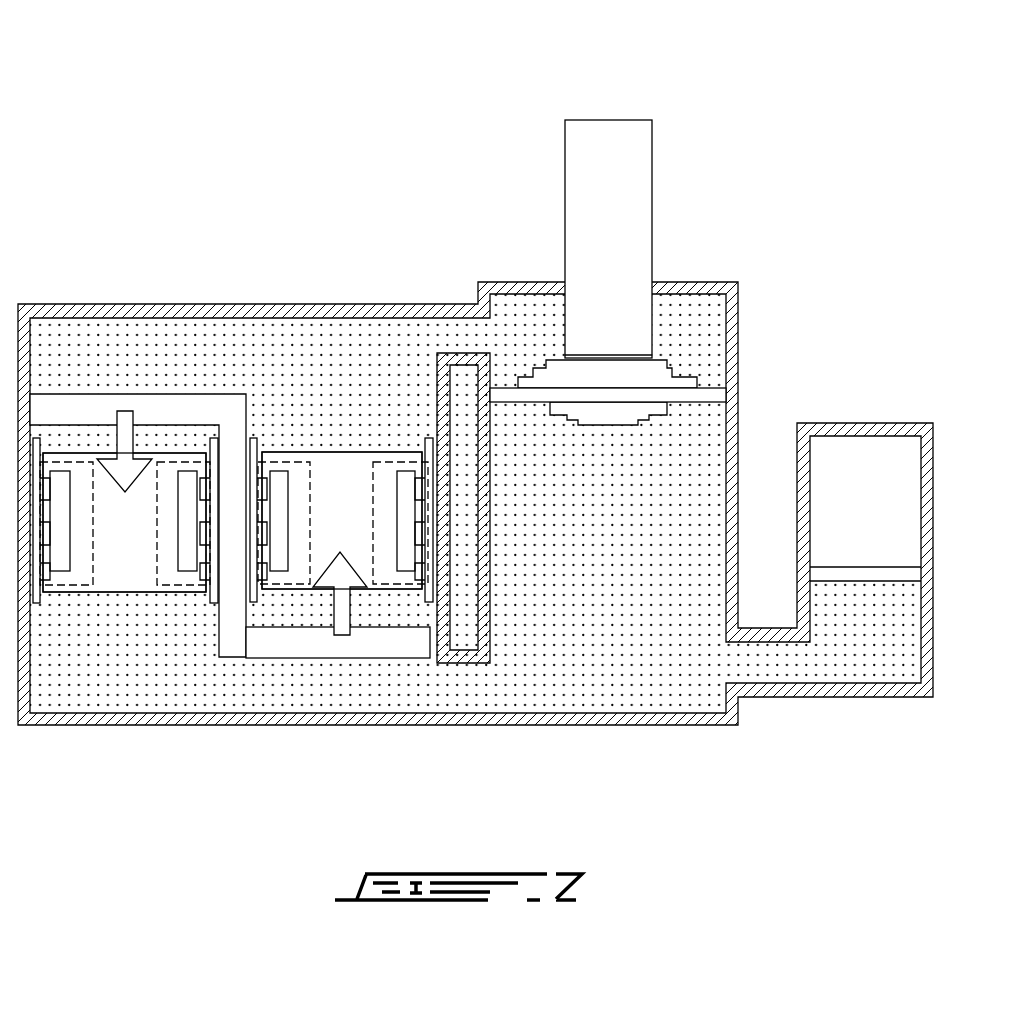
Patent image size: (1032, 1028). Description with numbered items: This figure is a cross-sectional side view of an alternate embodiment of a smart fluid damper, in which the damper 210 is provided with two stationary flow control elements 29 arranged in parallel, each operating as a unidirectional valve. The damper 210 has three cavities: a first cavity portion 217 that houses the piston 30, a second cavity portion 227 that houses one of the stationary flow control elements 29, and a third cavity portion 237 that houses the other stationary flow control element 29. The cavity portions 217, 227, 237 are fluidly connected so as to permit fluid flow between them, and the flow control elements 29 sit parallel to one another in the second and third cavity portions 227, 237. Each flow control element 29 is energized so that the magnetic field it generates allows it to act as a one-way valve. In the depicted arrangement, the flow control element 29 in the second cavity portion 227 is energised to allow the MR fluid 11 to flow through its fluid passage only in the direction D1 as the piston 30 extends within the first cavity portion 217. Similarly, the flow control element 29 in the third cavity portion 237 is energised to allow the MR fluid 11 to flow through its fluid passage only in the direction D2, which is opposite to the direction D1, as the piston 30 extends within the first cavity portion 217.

The damper 210 is at (275, 248).
The MR fluid 11 is at (602, 680).
The piston 30 is at (666, 346).
The stationary flow control element 29 is at (322, 437).
The first cavity portion 217 is at (618, 563).
The second cavity portion 227 is at (398, 416).
The third cavity portion 237 is at (175, 668).
The direction D1 is at (343, 624).
The direction D2 is at (125, 433).